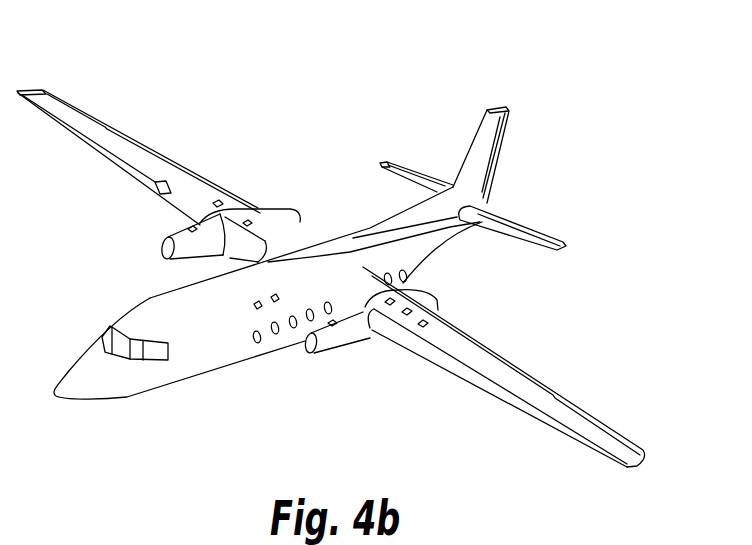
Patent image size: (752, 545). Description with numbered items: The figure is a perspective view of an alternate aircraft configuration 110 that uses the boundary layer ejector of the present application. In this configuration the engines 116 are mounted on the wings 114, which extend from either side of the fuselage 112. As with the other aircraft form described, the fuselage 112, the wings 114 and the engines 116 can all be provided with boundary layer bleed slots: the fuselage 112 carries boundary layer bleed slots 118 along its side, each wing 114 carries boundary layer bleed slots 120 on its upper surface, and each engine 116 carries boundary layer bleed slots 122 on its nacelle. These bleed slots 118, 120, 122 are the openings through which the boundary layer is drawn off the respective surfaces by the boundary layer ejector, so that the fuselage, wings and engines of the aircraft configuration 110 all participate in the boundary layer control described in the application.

The aircraft configuration 110 is at (336, 96).
The fuselage 112 is at (191, 348).
The wing 114 is at (540, 396).
The engine 116 is at (340, 343).
The boundary layer bleed slot 118 is at (261, 309).
The boundary layer bleed slot 120 is at (216, 198).
The boundary layer bleed slot 122 is at (192, 225).